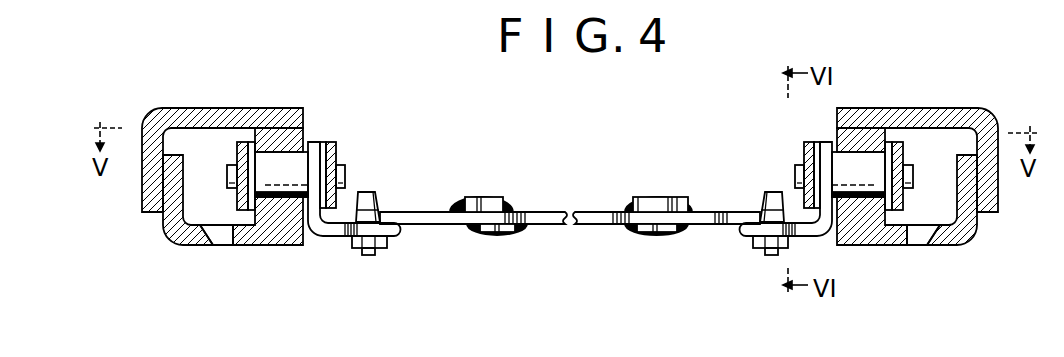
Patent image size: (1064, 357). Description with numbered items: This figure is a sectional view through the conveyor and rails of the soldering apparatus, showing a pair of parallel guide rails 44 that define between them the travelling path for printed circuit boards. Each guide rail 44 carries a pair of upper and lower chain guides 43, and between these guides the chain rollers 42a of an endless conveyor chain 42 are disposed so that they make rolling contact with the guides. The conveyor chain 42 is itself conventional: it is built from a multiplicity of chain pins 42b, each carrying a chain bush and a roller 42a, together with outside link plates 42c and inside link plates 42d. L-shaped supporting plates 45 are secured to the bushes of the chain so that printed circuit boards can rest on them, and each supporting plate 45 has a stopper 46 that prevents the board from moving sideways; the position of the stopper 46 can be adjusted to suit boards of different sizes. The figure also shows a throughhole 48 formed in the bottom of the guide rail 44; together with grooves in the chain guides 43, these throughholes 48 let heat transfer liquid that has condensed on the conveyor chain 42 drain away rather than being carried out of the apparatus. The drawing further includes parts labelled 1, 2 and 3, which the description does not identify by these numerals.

The rail 1 is at (717, 212).
The bush 2 is at (487, 199).
The resilient bush 3 is at (452, 201).
The endless conveyor chain 42 is at (306, 138).
The chain roller 42a is at (298, 243).
The chain pin 42b is at (227, 178).
The outside link plate 42c is at (238, 142).
The inside link plate 42d is at (252, 142).
The chain guide 43 is at (277, 133).
The guide rail 44 is at (158, 213).
The L-shaped supporting plate 45 is at (325, 231).
The stopper 46 is at (367, 193).
The throughhole 48 is at (222, 237).